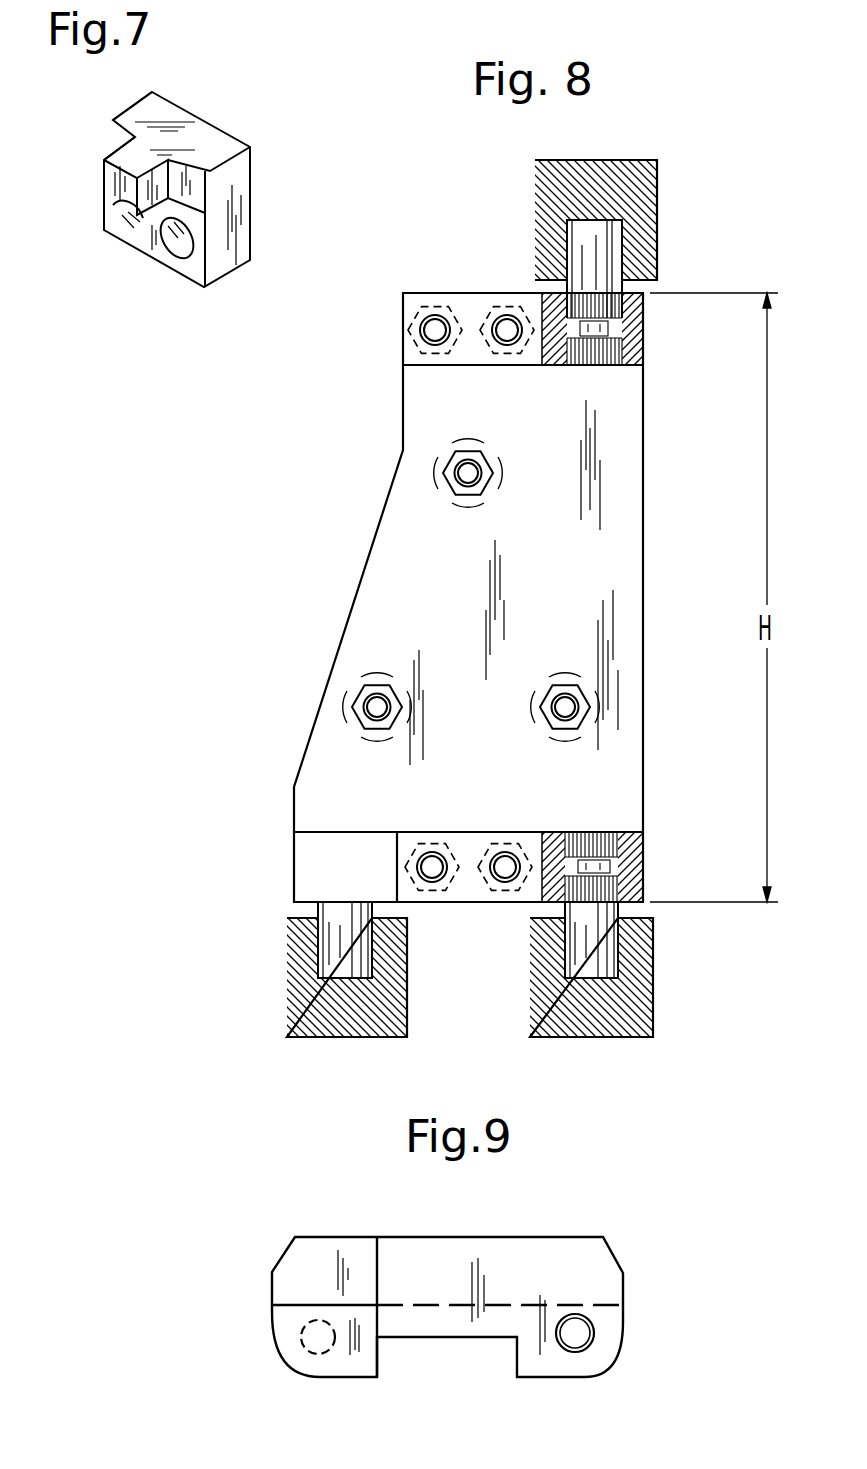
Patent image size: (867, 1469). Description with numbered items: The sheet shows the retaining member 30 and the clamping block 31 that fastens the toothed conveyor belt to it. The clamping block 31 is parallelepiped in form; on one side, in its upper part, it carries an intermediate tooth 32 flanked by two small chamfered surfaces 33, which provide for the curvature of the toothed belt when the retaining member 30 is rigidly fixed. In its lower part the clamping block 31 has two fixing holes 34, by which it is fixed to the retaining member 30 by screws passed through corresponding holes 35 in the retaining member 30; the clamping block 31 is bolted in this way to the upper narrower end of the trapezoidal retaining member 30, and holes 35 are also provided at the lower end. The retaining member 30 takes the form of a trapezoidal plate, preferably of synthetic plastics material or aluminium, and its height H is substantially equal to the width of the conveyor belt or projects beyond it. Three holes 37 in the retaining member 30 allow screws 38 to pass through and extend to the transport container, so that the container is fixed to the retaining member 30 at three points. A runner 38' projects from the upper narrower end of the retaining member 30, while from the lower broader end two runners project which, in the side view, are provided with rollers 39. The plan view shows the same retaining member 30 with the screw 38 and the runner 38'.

In FIG. 8, the retaining member 30 is at (629, 575).
In FIG. 9, the retaining member 30 is at (405, 1247).
In FIG. 7, the clamping block 31 is at (190, 138).
In FIG. 7, the intermediate tooth 32 is at (108, 192).
In FIG. 7, the chamfered surfaces 33 is at (200, 187).
In FIG. 7, the fixing holes 34 is at (125, 228).
In FIG. 8, the holes 35 is at (507, 325).
In FIG. 8, the holes 37 is at (462, 474).
In FIG. 8, the screws 38 is at (496, 940).
In FIG. 9, the screws 38 is at (265, 1354).
In FIG. 8, the runner 38' is at (654, 249).
In FIG. 9, the runner 38' is at (640, 1336).
In FIG. 8, the rollers 39 is at (642, 195).